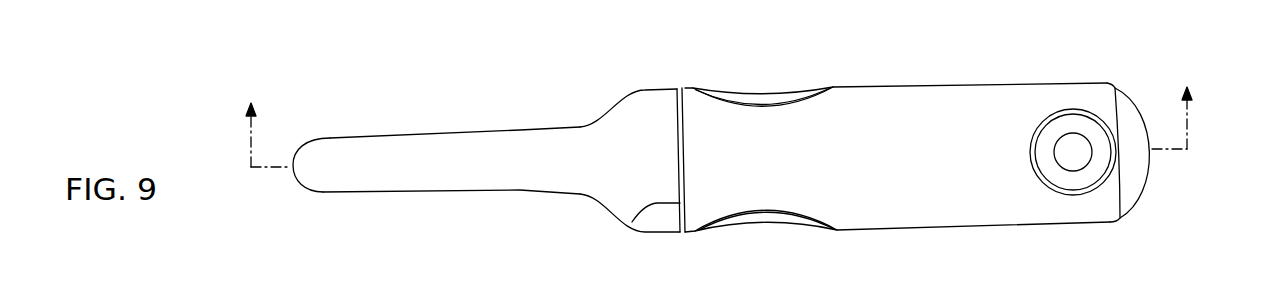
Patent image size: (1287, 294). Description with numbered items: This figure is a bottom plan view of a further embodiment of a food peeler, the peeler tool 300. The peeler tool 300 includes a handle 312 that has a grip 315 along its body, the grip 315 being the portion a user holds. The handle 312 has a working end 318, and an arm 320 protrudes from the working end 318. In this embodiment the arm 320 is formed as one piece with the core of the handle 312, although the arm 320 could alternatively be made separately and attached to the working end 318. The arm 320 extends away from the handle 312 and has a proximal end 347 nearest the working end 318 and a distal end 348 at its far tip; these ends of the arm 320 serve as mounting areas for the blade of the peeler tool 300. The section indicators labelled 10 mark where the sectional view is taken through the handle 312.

The peeler tool 300 is at (781, 145).
The handle 312 is at (1015, 93).
The grip 315 is at (947, 108).
The working end 318 is at (640, 210).
The arm 320 is at (467, 147).
The proximal end 347 is at (592, 142).
The distal end 348 is at (316, 160).
The section line 10- 10 is at (714, 110).